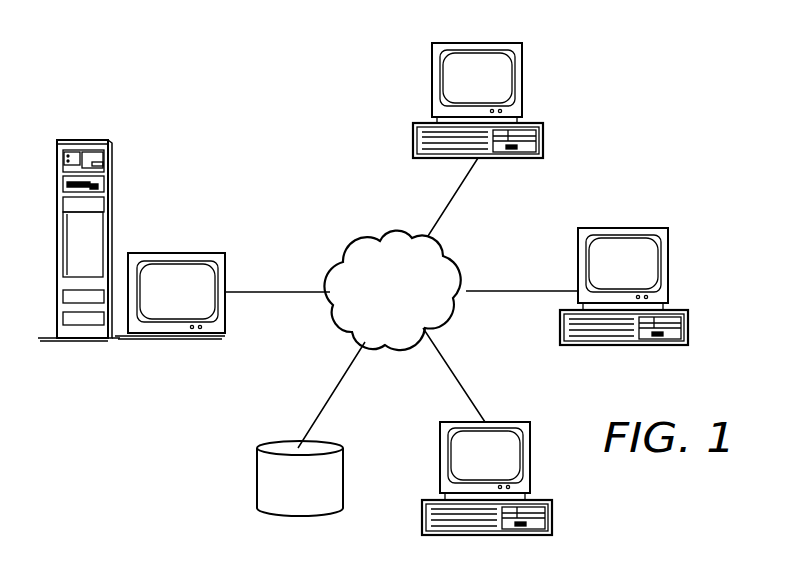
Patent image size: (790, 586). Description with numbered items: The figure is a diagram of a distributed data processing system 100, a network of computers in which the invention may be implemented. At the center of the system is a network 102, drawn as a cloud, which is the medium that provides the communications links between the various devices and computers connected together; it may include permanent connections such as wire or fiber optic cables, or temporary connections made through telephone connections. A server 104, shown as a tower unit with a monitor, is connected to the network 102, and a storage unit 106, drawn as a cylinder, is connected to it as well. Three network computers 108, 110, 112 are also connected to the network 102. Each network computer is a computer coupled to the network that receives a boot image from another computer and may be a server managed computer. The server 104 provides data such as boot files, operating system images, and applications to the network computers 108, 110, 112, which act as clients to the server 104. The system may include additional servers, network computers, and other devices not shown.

The distributed data processing system 100 is at (245, 82).
The network 102 is at (418, 298).
The server 104 is at (178, 252).
The storage unit 106 is at (257, 482).
The network computer 108 is at (543, 140).
The network computer 110 is at (625, 228).
The network computer 112 is at (552, 516).